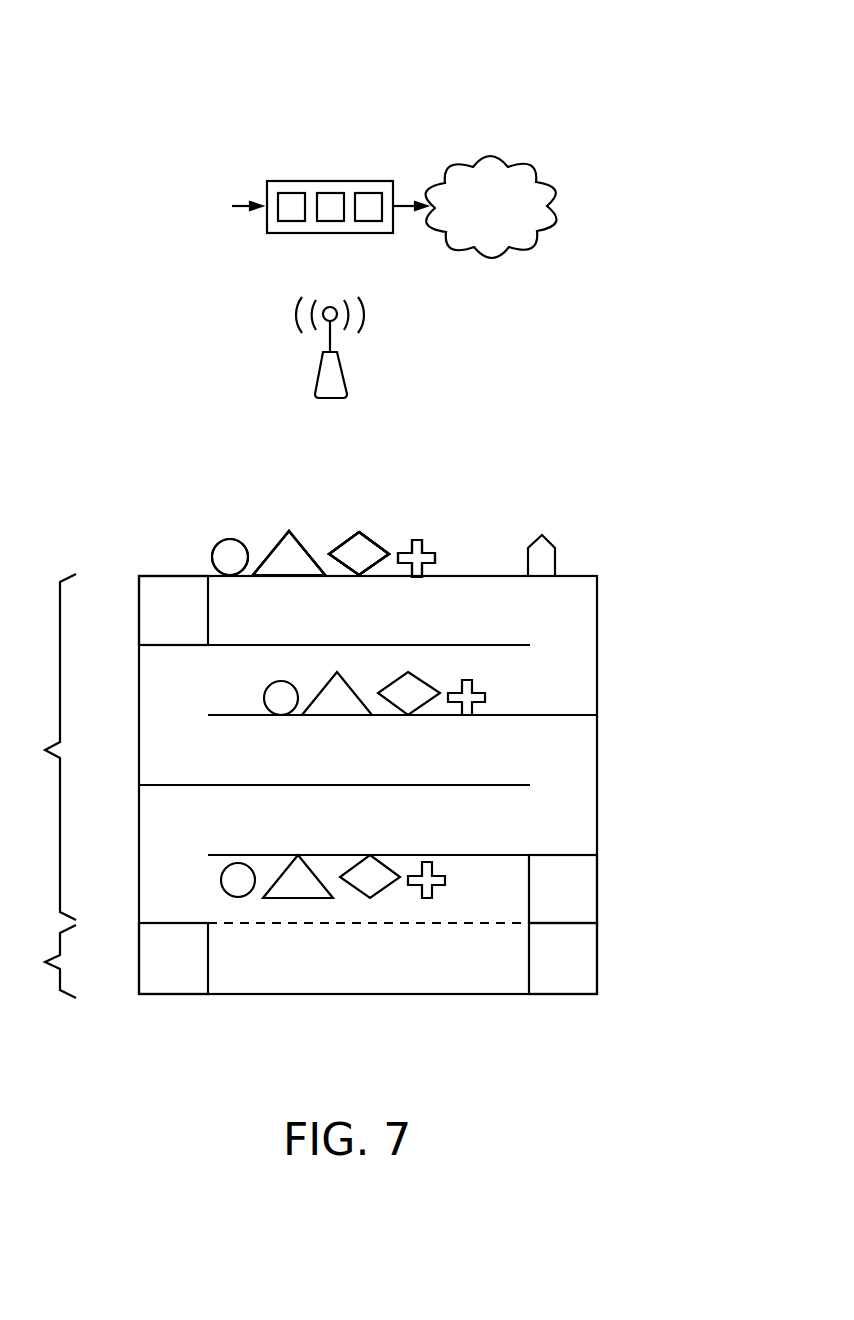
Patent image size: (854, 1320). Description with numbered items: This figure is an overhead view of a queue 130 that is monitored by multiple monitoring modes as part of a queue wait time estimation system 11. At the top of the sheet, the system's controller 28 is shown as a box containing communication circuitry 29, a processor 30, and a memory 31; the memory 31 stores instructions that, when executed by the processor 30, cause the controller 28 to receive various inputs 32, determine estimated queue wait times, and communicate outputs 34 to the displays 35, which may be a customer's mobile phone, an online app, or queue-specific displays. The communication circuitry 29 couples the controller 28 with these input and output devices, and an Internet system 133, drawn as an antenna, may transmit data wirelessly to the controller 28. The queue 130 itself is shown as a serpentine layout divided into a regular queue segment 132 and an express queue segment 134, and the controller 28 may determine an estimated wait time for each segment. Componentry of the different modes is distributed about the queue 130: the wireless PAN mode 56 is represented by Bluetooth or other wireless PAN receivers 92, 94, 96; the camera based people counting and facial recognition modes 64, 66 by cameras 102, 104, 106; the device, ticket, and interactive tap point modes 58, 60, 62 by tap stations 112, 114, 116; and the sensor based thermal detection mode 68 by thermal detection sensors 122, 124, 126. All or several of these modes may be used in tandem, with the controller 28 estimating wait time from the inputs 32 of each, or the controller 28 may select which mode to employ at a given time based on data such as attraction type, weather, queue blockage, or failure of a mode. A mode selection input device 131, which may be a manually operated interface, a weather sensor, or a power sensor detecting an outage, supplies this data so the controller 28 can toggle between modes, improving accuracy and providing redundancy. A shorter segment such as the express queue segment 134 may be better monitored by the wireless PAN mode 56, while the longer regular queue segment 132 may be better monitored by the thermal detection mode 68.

The queue wait time estimation system 11 is at (158, 110).
The controller 28 is at (320, 181).
The communication circuitry 29 is at (286, 222).
The processor 30 is at (324, 222).
The memory 31 is at (363, 222).
The inputs 32 is at (250, 200).
The outputs 34 is at (409, 202).
The displays 35 is at (491, 207).
The Internet system 133 is at (316, 370).
The queue 130 is at (658, 485).
The wireless PAN mode 56 is at (196, 544).
The camera based people counting mode 64 is at (274, 518).
The facial recognition mode 66 is at (289, 553).
The device tap point mode 58 is at (371, 518).
The ticket tap point mode 60 is at (359, 553).
The interactive tap point mode 62 is at (359, 553).
The sensor based thermal detection mode 68 is at (442, 535).
The wireless PAN receiver 92 is at (230, 557).
The wireless PAN receiver 94 is at (281, 698).
The wireless PAN receiver 96 is at (238, 880).
The camera 102 is at (289, 554).
The camera 104 is at (337, 694).
The camera 106 is at (298, 877).
The tap station 112 is at (359, 553).
The tap station 114 is at (409, 693).
The tap station 116 is at (370, 876).
The thermal detection sensor 122 is at (437, 557).
The thermal detection sensor 124 is at (487, 696).
The thermal detection sensor 126 is at (447, 881).
The mode selection input device 131 is at (557, 563).
The regular queue segment 132 is at (39, 747).
The express queue segment 134 is at (39, 961).